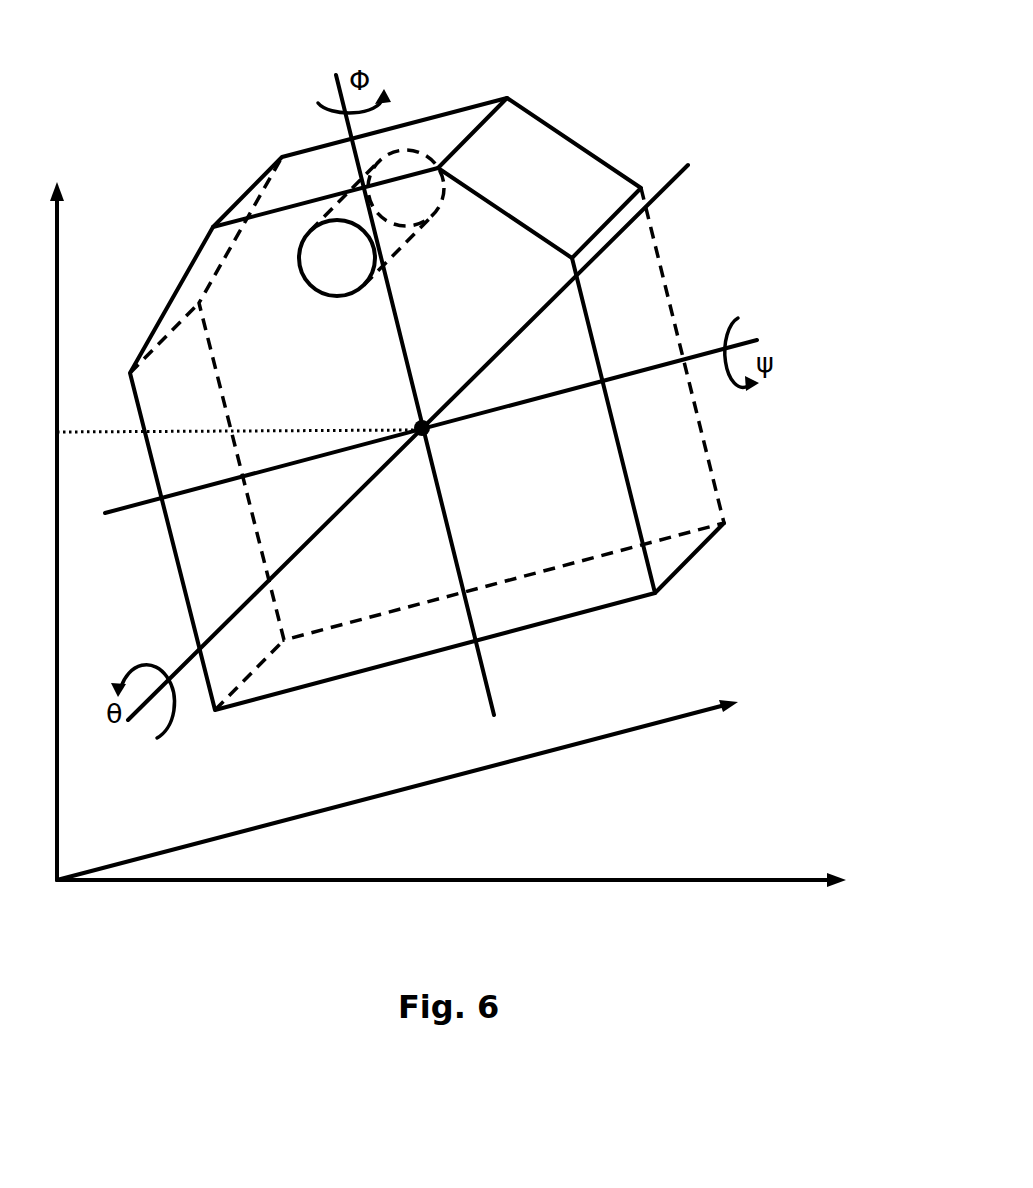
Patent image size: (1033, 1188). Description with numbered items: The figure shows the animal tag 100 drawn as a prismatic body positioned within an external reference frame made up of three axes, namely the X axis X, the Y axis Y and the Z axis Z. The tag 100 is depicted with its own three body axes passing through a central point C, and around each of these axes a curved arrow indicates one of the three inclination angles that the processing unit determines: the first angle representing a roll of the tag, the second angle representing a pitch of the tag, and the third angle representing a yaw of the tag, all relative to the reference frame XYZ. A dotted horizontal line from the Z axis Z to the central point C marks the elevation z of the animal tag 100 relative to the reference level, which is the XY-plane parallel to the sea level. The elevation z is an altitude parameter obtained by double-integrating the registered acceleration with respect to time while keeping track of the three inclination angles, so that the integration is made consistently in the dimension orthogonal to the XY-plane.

The animal tag 100 is at (427, 376).
The center point of workpiece C is at (361, 383).
The X axis of reference frame X is at (451, 900).
The Y axis of reference frame Y is at (397, 790).
The Z axis of reference frame Z is at (43, 531).
The elevation z is at (221, 432).